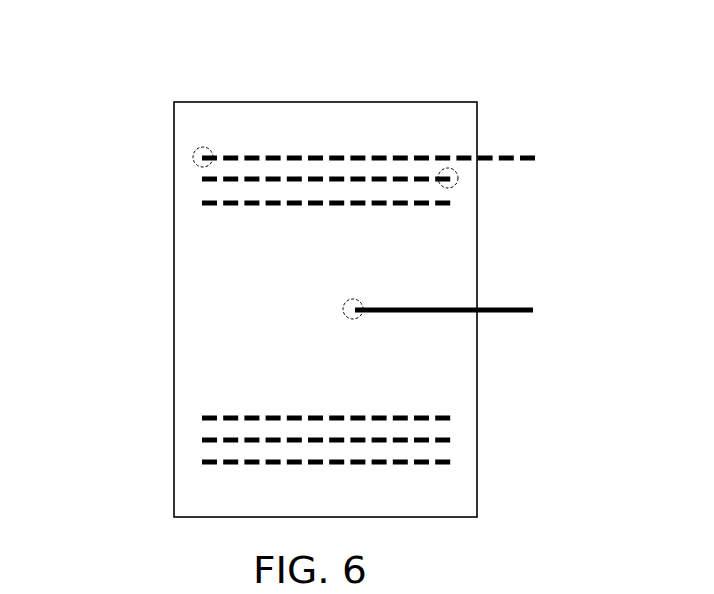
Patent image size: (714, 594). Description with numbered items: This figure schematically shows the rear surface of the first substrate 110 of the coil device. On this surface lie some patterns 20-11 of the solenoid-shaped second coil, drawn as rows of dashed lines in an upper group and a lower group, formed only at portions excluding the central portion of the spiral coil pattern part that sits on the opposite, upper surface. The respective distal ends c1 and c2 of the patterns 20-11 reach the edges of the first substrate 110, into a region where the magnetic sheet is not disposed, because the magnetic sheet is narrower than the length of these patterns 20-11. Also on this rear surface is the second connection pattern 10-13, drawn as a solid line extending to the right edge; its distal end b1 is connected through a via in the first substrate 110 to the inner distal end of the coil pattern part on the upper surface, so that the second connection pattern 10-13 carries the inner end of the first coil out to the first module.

The first substrate 110 is at (330, 36).
The patterns of the second coil 20-11 is at (288, 155).
The distal end of the patterns of the second coil c1 is at (195, 162).
The distal end of the patterns of the second coil c2 is at (456, 186).
The distal end of the second connection pattern b1 is at (360, 302).
The second connection pattern 10-13 is at (512, 317).